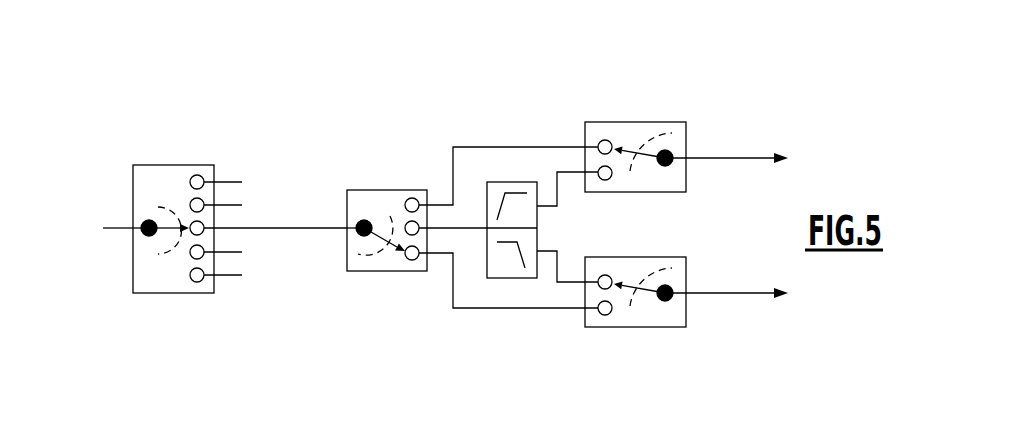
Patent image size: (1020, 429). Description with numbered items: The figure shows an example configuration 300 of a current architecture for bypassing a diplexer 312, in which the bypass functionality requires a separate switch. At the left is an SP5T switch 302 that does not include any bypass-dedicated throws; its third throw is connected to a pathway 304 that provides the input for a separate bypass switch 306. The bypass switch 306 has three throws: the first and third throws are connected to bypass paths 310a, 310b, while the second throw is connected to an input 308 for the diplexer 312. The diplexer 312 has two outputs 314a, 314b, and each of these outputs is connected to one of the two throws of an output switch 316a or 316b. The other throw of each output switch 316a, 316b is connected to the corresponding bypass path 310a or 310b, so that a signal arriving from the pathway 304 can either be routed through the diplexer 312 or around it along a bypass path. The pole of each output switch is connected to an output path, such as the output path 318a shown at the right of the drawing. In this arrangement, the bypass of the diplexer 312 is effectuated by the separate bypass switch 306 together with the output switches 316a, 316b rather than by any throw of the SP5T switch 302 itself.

The configuration 300 is at (303, 95).
The SP5T switch 302 is at (170, 163).
The pathway 304 is at (272, 232).
The bypass switch 306 is at (385, 190).
The input 308 is at (472, 228).
The bypass path 310a is at (452, 162).
The bypass path 310b is at (452, 287).
The diplexer 312 is at (513, 278).
The diplexer output 314a is at (559, 195).
The diplexer output 314b is at (559, 262).
The output switch 316a is at (628, 122).
The output switch 316b is at (628, 327).
The output path 318a is at (728, 158).